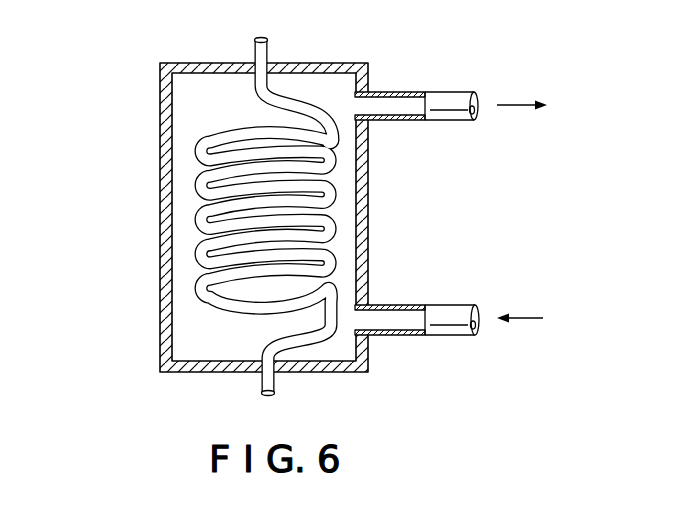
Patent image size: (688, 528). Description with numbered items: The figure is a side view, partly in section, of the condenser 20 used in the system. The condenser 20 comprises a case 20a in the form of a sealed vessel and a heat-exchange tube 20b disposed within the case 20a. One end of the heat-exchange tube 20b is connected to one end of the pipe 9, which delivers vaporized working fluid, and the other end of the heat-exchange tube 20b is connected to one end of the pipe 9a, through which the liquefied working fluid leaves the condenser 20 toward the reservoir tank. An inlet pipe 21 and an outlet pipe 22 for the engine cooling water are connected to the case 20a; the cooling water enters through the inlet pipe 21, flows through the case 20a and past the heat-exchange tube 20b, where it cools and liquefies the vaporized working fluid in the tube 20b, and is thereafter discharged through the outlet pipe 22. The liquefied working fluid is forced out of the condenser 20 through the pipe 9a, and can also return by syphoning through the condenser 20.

The pipe 9 is at (276, 386).
The pipe 9a is at (269, 50).
The condenser 20 is at (145, 112).
The case 20a is at (165, 288).
The heat-exchange tube 20b is at (200, 214).
The inlet pipe 21 is at (412, 336).
The outlet pipe 22 is at (405, 92).